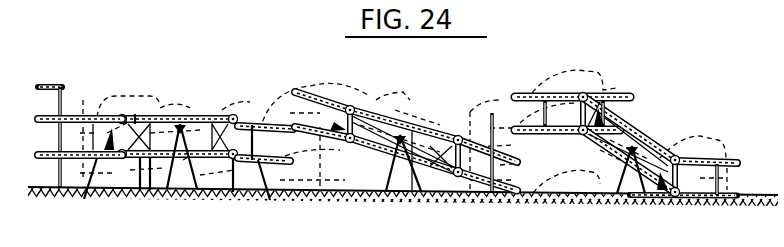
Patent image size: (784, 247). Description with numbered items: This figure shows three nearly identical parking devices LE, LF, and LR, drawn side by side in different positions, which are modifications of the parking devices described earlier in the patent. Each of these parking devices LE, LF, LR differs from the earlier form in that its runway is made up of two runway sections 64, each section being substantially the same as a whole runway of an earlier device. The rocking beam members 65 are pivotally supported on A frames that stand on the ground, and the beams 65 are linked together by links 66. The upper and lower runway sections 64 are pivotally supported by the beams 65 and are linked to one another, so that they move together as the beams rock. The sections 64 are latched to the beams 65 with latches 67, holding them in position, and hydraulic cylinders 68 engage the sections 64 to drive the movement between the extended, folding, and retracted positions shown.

The runway sections 64 is at (97, 115).
The rocking beam members 65 is at (222, 114).
The links 66 is at (135, 114).
The latches 67 is at (172, 114).
The hydraulic cylinders 68 is at (140, 190).
The parking device LE is at (187, 77).
The parking device LF is at (426, 98).
The parking device LR is at (672, 122).